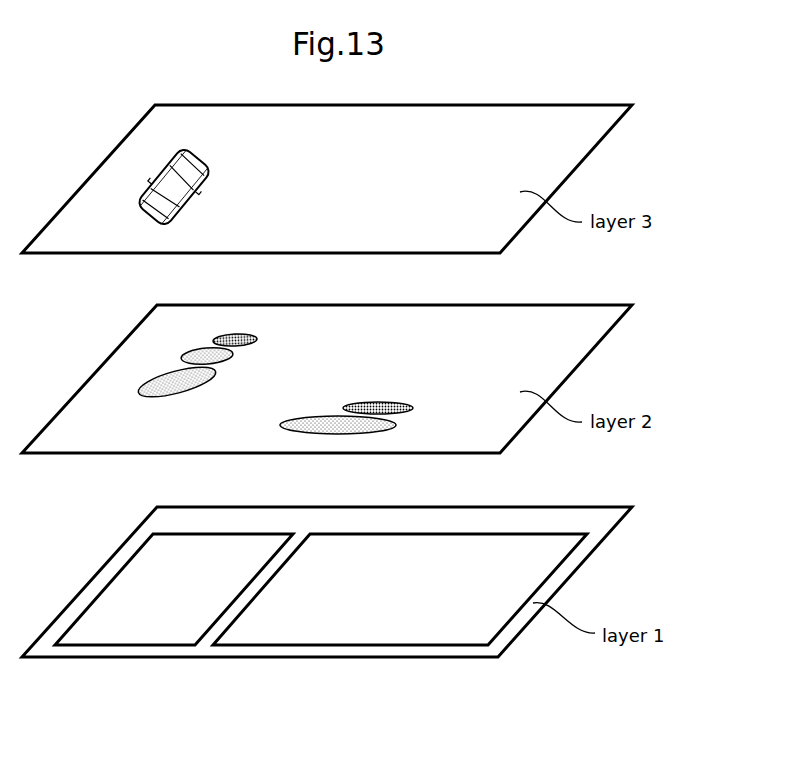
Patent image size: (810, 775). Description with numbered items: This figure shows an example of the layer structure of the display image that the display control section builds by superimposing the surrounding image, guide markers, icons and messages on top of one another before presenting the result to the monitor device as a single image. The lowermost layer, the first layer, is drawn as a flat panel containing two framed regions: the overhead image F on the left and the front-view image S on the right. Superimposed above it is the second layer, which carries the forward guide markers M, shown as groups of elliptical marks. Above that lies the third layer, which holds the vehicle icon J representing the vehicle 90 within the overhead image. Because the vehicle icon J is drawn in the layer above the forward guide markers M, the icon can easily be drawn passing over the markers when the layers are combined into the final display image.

The vehicle icon J is at (132, 170).
The vehicle 90 is at (148, 193).
The forward guide markers M is at (176, 347).
The overhead image F is at (107, 585).
The front-view image S is at (393, 643).